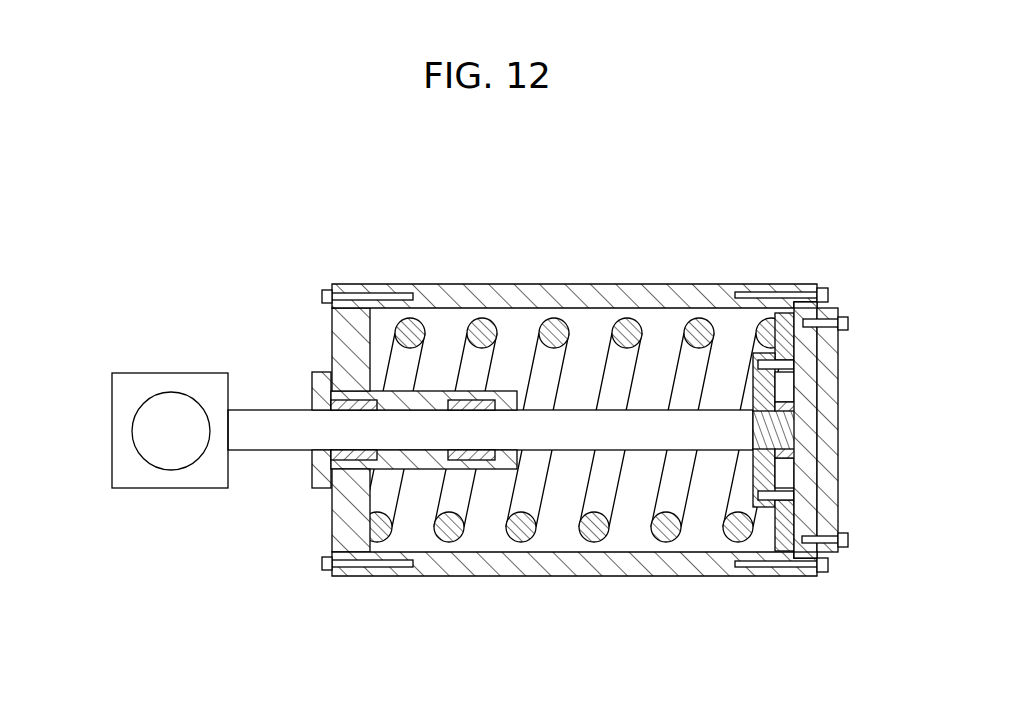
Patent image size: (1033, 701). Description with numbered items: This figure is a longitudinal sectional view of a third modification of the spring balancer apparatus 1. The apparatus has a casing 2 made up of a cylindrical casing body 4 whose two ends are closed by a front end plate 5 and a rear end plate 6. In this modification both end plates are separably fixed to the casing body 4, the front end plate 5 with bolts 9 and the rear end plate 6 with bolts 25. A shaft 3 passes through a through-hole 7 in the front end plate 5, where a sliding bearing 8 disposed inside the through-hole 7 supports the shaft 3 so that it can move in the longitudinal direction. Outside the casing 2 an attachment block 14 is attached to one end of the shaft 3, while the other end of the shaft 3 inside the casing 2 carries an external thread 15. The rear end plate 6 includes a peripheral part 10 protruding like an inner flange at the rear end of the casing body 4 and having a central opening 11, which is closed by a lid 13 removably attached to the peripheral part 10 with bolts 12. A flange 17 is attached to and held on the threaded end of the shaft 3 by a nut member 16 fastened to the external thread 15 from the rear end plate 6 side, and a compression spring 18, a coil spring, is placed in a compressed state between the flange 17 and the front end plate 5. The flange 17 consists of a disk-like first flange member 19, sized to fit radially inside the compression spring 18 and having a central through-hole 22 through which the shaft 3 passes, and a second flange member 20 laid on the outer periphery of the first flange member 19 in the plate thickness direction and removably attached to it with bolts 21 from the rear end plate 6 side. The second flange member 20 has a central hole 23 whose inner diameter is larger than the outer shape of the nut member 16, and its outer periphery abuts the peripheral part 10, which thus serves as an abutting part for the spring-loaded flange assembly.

The damper device 1 is at (195, 255).
The casing 2 is at (574, 379).
The shaft 3 is at (567, 465).
The casing body 4 is at (620, 283).
The front end plate 5 is at (332, 328).
The rear end plate 6 is at (869, 453).
The through-hole 7 is at (353, 410).
The sliding bearing 8 is at (314, 468).
The bolts 9 is at (322, 296).
The peripheral part 10 is at (820, 306).
The opening 11 is at (815, 515).
The bolts 12 is at (849, 320).
The lid 13 is at (838, 465).
The attachment block 14 is at (112, 435).
The external thread 15 is at (800, 435).
The nut member 16 is at (799, 405).
The flange 17 is at (742, 375).
The compression spring 18 is at (432, 535).
The first flange member 19 is at (752, 480).
The second flange member 20 is at (775, 530).
The bolts 21 is at (804, 363).
The through-hole 22 is at (753, 428).
The central hole 23 is at (794, 472).
The bolts 25 is at (828, 293).